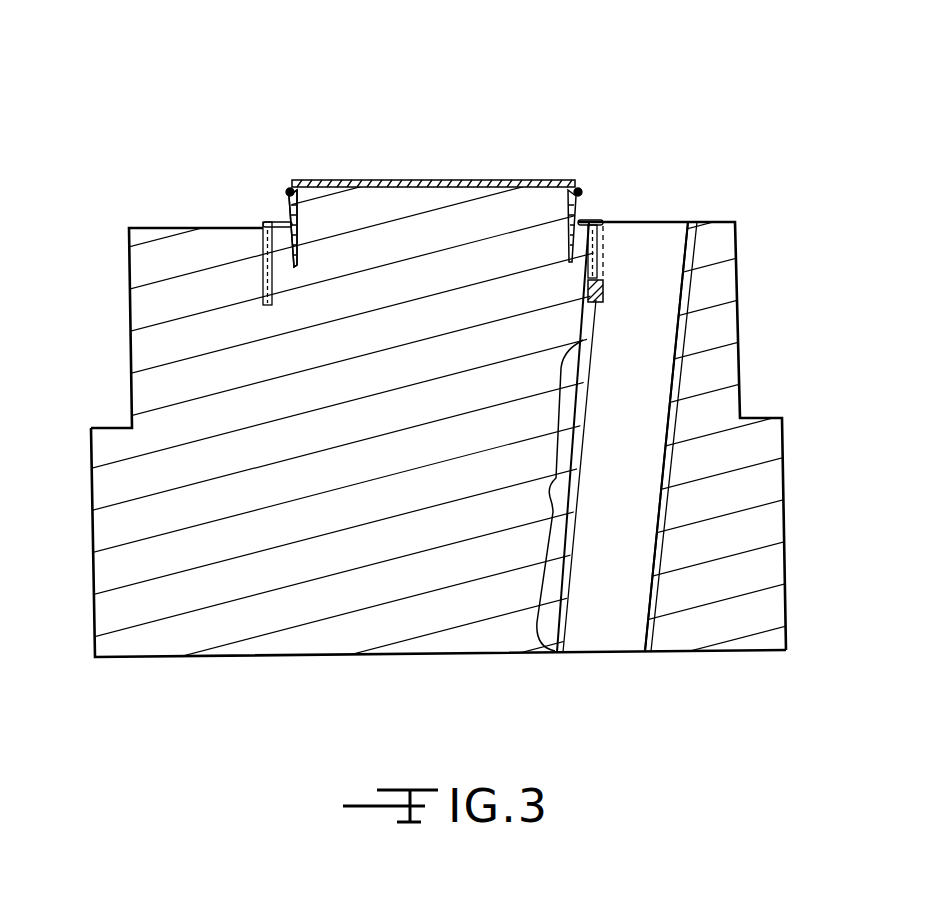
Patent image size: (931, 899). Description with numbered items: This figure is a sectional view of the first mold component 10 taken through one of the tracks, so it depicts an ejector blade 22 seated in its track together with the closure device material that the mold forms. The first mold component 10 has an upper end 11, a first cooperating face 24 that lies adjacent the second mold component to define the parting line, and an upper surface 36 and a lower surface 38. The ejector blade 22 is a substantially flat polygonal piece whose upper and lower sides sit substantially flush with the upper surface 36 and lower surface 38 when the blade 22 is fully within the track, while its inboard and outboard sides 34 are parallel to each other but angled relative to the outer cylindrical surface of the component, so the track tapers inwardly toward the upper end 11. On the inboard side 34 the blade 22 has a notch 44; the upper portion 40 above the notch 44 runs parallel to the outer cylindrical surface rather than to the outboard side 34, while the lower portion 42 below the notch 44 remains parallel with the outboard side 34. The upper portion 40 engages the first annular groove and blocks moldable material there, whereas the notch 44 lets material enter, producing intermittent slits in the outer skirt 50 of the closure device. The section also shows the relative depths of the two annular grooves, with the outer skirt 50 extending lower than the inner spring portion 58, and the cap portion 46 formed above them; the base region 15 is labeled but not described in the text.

The first mold component 10 is at (402, 58).
The upper end 11 is at (556, 115).
The base portion 15 is at (170, 712).
The ejector blade 22 is at (667, 237).
The first cooperating face 24 is at (712, 222).
The second pair of opposed sides 34 is at (670, 470).
The upper surface 36 is at (190, 228).
The lower surface 38 is at (312, 657).
The upper portion of the inboard side 40 is at (573, 270).
The lower portion of the inboard side 42 is at (549, 492).
The notch 44 is at (588, 294).
The cap portion 46 is at (430, 180).
The outer skirt 50 is at (262, 278).
The inner spring portion 58 is at (297, 230).